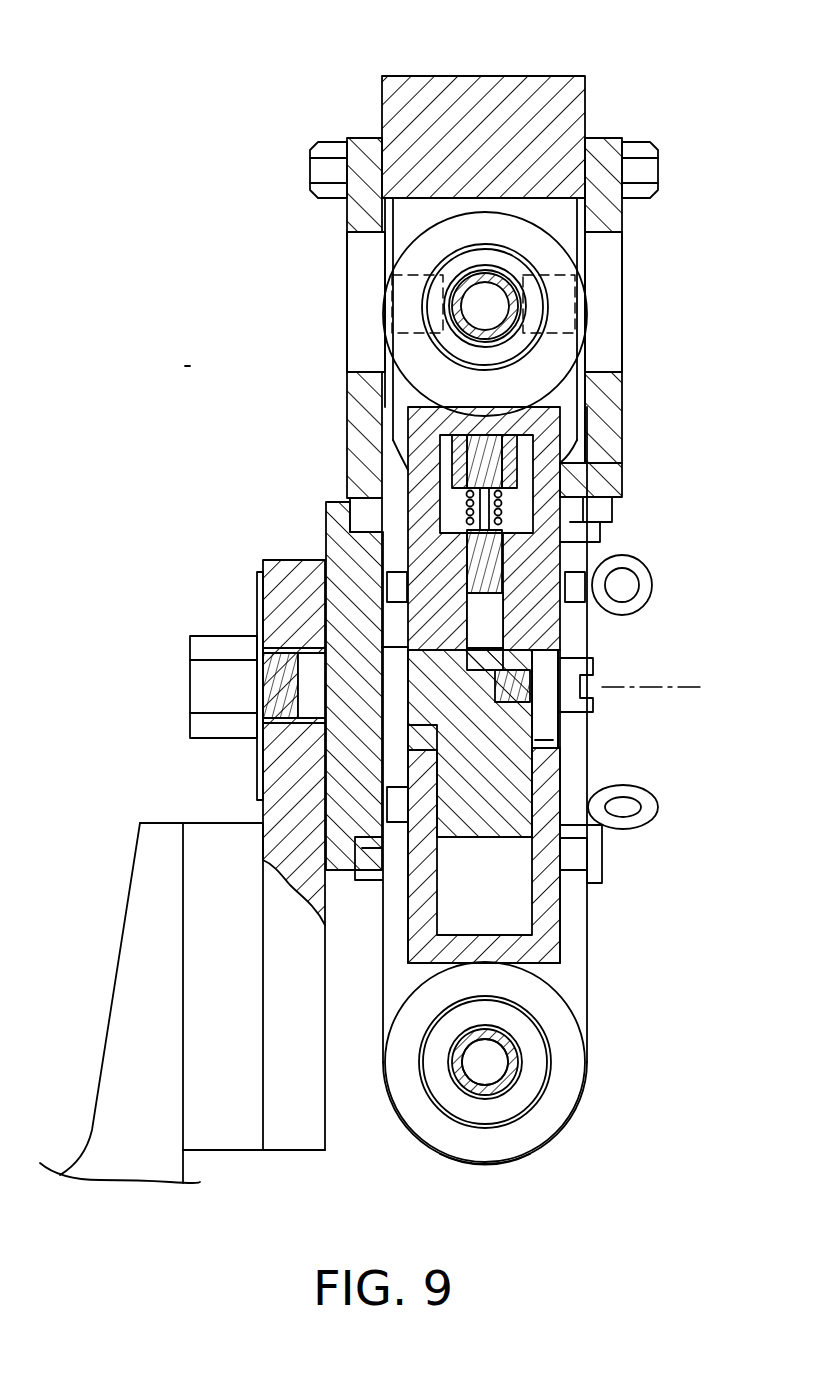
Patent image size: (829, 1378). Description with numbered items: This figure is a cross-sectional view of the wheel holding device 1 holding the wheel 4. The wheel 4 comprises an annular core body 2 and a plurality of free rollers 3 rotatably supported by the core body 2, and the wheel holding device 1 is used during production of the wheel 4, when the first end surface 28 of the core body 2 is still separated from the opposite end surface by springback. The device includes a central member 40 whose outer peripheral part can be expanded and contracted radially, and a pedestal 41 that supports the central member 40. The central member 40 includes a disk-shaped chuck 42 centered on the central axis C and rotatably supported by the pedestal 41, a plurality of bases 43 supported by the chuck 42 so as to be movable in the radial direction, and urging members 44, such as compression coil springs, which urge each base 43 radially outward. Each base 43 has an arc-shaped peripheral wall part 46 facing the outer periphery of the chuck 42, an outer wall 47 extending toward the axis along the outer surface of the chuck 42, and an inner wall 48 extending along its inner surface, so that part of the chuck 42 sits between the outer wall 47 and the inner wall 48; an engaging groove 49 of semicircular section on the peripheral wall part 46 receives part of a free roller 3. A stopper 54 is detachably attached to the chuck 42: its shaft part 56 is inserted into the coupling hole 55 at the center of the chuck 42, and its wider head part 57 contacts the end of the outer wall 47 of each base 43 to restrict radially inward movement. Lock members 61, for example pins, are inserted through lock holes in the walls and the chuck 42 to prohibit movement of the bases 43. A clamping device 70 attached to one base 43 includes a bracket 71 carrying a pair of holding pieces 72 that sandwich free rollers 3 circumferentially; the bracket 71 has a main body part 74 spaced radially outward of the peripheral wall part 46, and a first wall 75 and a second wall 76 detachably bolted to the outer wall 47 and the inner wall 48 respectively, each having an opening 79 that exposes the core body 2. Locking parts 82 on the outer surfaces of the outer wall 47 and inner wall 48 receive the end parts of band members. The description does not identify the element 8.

The wheel holding device 1 is at (190, 366).
The core body 2 is at (505, 1040).
The free roller 3 is at (548, 1118).
The wheel 4 is at (519, 1163).
The bearing 8 is at (530, 1065).
The first end surface 28 is at (540, 300).
The central member 40 is at (598, 910).
The pedestal 41 is at (138, 860).
The chuck 42 is at (517, 775).
The base 43 is at (575, 472).
The urging member 44 is at (470, 490).
The peripheral wall part 46 is at (570, 430).
The outer wall 47 is at (578, 522).
The inner wall 48 is at (378, 515).
The engaging groove 49 is at (470, 408).
The stopper 54 is at (601, 665).
The coupling hole 55 is at (525, 692).
The shaft part 56 is at (510, 665).
The head part 57 is at (546, 730).
The lock member 61 is at (655, 582).
The clamping device 70 is at (314, 100).
The bracket 71 is at (405, 75).
The holding piece 72 is at (570, 243).
The main body part 74 is at (506, 80).
The first wall 75 is at (563, 453).
The second wall 76 is at (362, 215).
The opening 79 is at (362, 360).
The locking part 82 is at (598, 858).